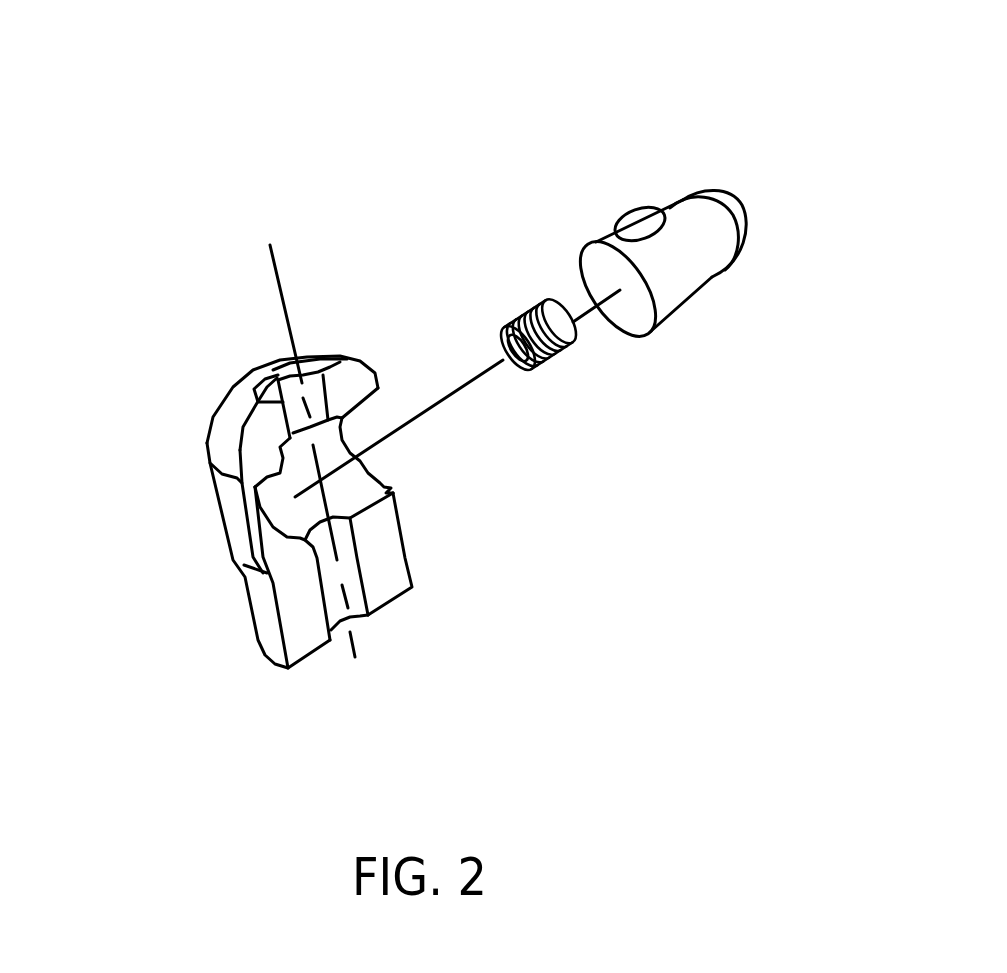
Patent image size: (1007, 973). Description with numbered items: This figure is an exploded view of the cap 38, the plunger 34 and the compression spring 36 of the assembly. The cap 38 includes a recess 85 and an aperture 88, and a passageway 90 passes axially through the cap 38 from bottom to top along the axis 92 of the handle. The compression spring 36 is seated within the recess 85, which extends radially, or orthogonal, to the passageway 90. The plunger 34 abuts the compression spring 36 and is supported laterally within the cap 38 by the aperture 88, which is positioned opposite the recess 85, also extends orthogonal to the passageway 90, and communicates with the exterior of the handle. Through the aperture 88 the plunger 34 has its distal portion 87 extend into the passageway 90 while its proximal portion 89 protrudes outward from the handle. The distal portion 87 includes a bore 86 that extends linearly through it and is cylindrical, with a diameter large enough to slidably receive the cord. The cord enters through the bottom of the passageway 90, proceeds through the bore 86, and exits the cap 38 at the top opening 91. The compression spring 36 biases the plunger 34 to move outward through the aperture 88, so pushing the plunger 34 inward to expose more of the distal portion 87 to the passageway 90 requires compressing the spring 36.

The plunger 34 is at (677, 287).
The compression spring 36 is at (550, 372).
The cap 38 is at (288, 598).
The recess 85 is at (290, 536).
The bore 86 is at (645, 228).
The distal portion 87 is at (648, 252).
The aperture 88 is at (386, 482).
The proximal portion 89 is at (727, 205).
The passageway 90 is at (310, 357).
The top opening 91 is at (283, 372).
The axis 92 is at (277, 268).